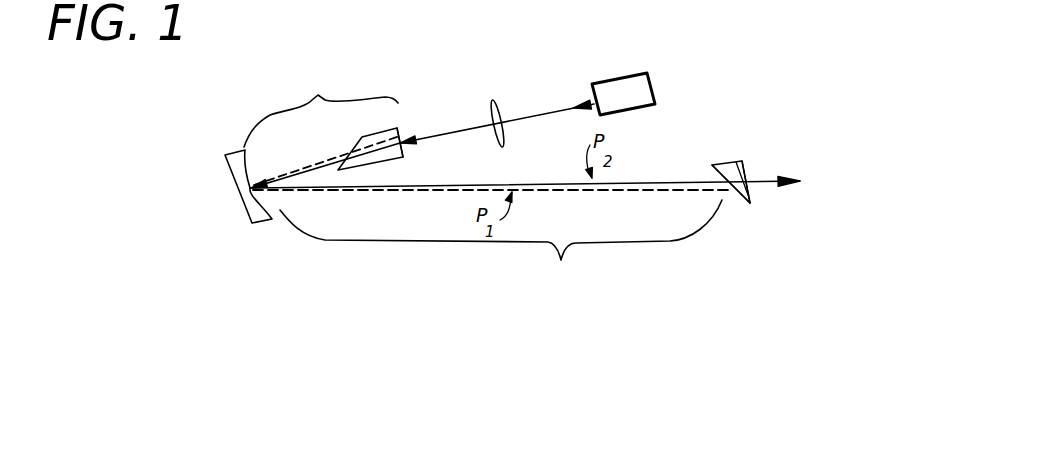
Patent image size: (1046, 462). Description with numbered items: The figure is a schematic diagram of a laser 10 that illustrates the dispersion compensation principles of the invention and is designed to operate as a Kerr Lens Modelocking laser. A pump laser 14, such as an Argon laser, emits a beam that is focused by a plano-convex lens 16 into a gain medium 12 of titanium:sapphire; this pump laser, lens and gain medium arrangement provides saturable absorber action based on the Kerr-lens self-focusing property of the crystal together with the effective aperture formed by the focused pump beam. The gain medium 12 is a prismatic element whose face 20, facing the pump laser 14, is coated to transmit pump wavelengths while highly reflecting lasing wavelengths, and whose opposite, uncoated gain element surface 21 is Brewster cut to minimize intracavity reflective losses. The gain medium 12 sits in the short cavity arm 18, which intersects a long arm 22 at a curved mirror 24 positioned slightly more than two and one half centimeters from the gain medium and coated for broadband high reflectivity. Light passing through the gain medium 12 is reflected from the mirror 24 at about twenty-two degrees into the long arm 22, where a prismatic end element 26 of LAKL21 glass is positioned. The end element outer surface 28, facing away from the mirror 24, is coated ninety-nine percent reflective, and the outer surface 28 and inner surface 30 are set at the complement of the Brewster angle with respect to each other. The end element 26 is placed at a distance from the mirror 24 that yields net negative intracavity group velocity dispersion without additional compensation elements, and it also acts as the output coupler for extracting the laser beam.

The laser 10 is at (492, 262).
The gain medium 12 is at (398, 156).
The pump laser 14 is at (630, 88).
The plano-convex lens 16 is at (492, 107).
The short cavity arm 18 is at (321, 105).
The face of the gain medium 20 is at (408, 128).
The uncoated gain element surface 21 is at (356, 148).
The long arm 22 is at (501, 246).
The curved mirror 24 is at (253, 218).
The prismatic end element 26 is at (742, 160).
The end element outer surface 28 is at (752, 194).
The end element inner surface 30 is at (741, 196).